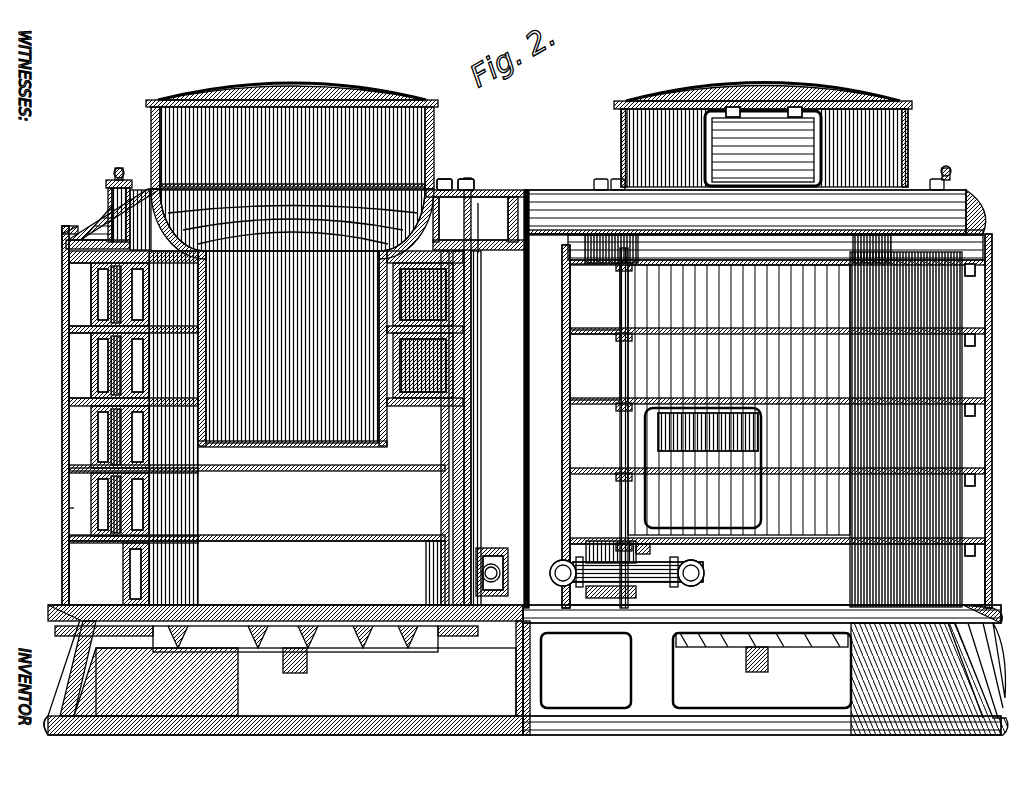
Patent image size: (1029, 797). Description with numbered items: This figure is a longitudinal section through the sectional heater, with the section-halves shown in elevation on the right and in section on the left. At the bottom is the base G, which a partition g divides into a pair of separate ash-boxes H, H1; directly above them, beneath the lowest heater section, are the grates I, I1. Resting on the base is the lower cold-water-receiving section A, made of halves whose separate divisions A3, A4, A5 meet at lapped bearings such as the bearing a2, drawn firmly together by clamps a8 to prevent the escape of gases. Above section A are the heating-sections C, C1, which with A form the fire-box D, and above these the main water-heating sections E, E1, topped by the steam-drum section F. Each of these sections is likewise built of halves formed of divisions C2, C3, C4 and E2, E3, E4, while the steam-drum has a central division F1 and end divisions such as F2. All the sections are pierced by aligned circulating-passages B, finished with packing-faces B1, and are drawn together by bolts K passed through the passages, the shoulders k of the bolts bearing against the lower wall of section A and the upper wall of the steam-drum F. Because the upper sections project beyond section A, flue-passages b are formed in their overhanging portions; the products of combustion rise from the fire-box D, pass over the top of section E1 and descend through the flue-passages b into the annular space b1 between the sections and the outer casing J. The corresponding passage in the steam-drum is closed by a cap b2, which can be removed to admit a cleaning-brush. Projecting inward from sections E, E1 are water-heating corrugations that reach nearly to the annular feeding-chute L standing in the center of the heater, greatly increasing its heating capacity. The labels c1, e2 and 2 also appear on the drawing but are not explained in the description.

The annular feeding-chute L is at (372, 97).
The bolts K is at (462, 205).
The shoulders k is at (436, 171).
The steam-drum section F is at (96, 198).
The central division of steam-drum section F1 is at (955, 200).
The division of steam-drum section F2 is at (74, 222).
The cap b2 is at (111, 160).
The outer casing J is at (54, 428).
The main water-heating section E is at (83, 350).
The main water-heating section E1 is at (85, 283).
The division of water-heating section E2 is at (578, 296).
The division of water-heating section E3 is at (83, 325).
The division of water-heating section E4 is at (552, 366).
The packing-faces B1 is at (168, 282).
The circulating-passages B is at (610, 480).
The flue-passages b is at (90, 276).
The annular space b1 is at (66, 498).
The flue opening c1 is at (400, 356).
The frame opening e2 is at (424, 339).
The heating-section C is at (527, 402).
The heating-section C1 is at (775, 438).
The division of heating-section C2 is at (432, 490).
The division of heating-section C3 is at (350, 448).
The division of heating-section C4 is at (770, 482).
The fire-box D is at (250, 548).
The catch 2 is at (628, 258).
The lower cold-water-receiving section A is at (527, 573).
The division of lower section A3 is at (433, 556).
The division of lower section A4 is at (258, 560).
The division of lower section A5 is at (722, 570).
The bearing a2 is at (545, 556).
The clamps a8 is at (642, 541).
The base G is at (68, 665).
The partition g is at (508, 676).
The ash-box H is at (306, 682).
The ash-box H1 is at (696, 670).
The grate I is at (232, 645).
The grate I1 is at (790, 640).